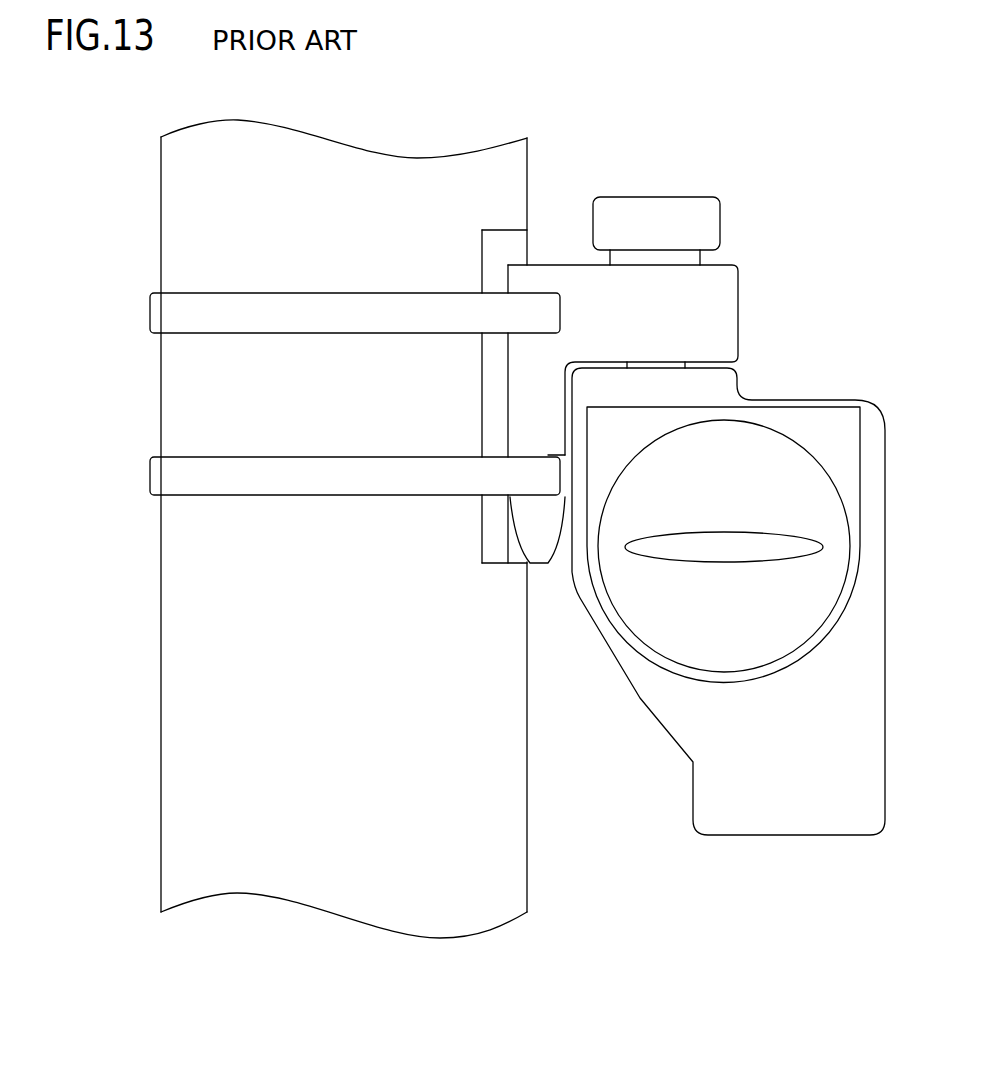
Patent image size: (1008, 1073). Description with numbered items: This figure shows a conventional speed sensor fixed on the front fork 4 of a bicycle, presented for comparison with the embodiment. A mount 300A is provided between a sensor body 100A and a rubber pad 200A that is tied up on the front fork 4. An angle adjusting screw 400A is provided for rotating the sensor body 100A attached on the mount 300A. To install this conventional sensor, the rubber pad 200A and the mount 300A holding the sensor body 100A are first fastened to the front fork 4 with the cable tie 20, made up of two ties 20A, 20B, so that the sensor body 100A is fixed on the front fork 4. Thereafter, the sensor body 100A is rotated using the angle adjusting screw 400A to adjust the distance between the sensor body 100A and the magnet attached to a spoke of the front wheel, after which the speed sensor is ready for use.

The front fork 4 is at (193, 760).
The cable tie 20 is at (285, 392).
The cable tie 20A is at (190, 313).
The cable tie 20B is at (311, 476).
The rubber pad 200A is at (497, 547).
The mount 300A is at (700, 315).
The angle adjusting screw 400A is at (652, 222).
The sensor body 100A is at (798, 798).